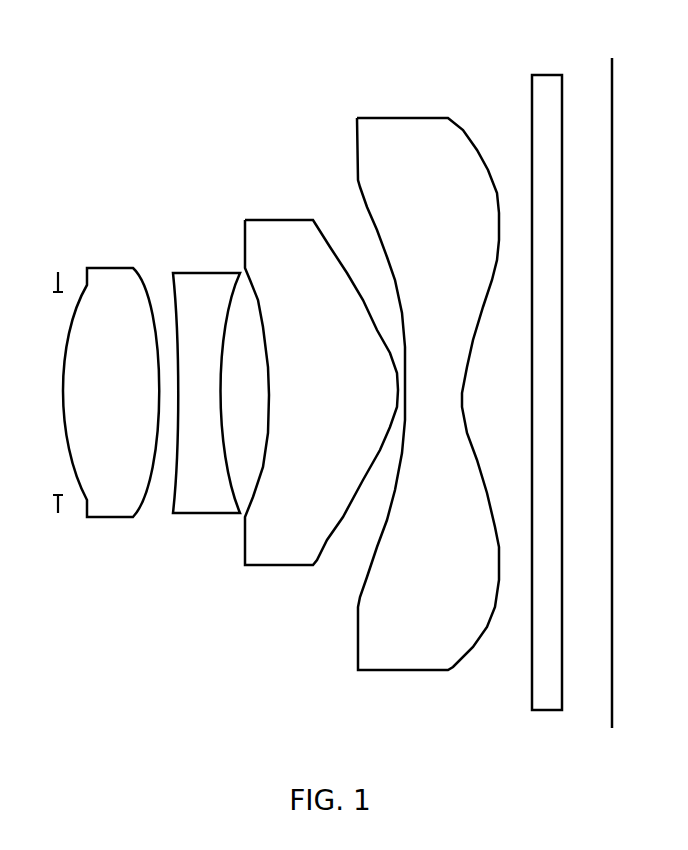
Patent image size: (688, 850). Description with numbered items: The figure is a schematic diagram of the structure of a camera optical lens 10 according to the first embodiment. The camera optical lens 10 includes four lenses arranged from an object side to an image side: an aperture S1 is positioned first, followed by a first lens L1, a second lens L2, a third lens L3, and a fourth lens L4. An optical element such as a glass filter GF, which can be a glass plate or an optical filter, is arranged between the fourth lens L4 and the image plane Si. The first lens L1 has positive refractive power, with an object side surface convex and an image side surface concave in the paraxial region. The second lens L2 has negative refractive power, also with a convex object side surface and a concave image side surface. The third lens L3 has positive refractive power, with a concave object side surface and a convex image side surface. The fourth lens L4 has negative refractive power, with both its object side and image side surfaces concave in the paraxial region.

The camera optical lens 10 is at (353, 42).
The aperture S1 is at (44, 389).
The first lens L1 is at (111, 379).
The second lens L2 is at (206, 378).
The third lens L3 is at (321, 376).
The fourth lens L4 is at (428, 379).
The glass filter GF is at (545, 379).
The image plane Si is at (608, 379).